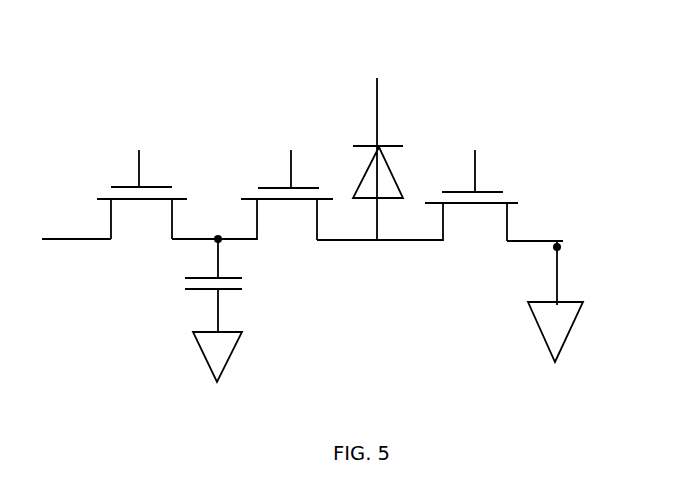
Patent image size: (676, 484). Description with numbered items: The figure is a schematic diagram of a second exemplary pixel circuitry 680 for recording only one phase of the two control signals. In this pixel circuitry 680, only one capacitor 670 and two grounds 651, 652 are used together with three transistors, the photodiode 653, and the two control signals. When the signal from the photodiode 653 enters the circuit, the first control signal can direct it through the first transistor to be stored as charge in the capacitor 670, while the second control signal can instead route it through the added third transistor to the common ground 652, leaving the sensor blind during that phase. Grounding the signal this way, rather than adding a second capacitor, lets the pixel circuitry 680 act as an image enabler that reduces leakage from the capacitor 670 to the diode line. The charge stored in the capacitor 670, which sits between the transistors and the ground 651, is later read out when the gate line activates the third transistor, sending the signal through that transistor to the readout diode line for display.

The ground 651 is at (218, 356).
The common ground 652 is at (555, 315).
The photodiode 653 is at (377, 183).
The capacitor 670 is at (235, 284).
The pixel circuitry 680 is at (494, 31).